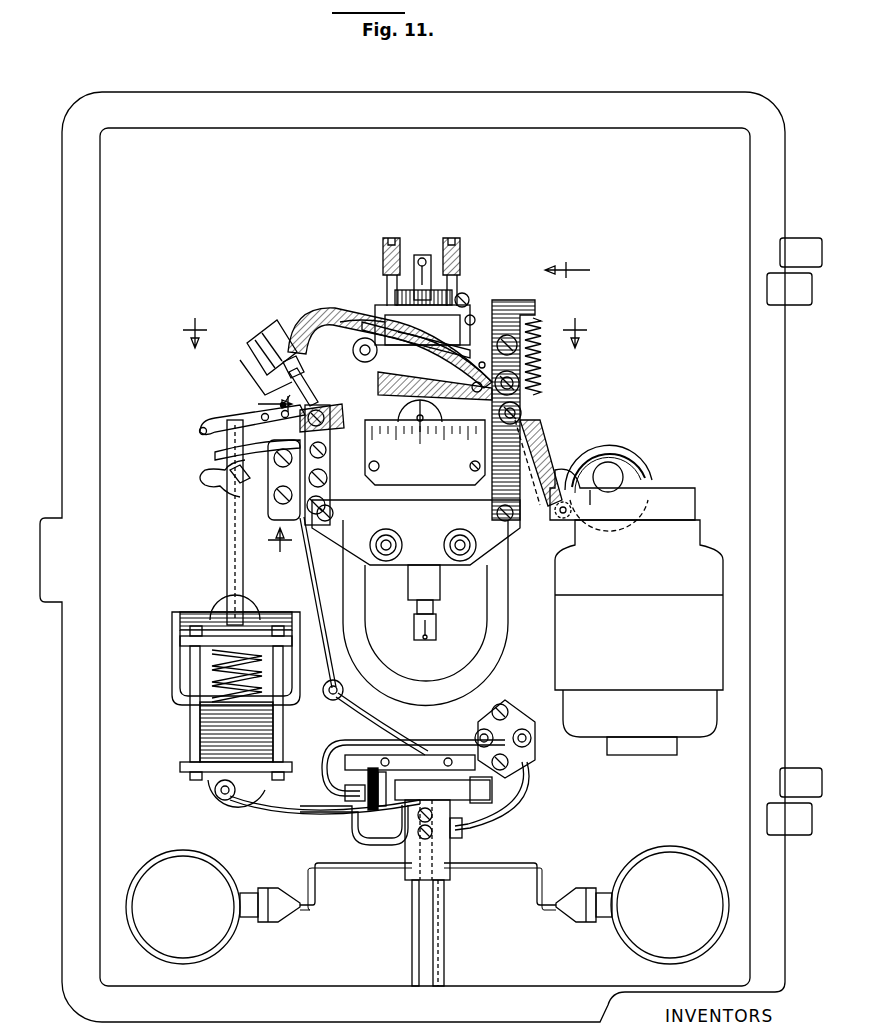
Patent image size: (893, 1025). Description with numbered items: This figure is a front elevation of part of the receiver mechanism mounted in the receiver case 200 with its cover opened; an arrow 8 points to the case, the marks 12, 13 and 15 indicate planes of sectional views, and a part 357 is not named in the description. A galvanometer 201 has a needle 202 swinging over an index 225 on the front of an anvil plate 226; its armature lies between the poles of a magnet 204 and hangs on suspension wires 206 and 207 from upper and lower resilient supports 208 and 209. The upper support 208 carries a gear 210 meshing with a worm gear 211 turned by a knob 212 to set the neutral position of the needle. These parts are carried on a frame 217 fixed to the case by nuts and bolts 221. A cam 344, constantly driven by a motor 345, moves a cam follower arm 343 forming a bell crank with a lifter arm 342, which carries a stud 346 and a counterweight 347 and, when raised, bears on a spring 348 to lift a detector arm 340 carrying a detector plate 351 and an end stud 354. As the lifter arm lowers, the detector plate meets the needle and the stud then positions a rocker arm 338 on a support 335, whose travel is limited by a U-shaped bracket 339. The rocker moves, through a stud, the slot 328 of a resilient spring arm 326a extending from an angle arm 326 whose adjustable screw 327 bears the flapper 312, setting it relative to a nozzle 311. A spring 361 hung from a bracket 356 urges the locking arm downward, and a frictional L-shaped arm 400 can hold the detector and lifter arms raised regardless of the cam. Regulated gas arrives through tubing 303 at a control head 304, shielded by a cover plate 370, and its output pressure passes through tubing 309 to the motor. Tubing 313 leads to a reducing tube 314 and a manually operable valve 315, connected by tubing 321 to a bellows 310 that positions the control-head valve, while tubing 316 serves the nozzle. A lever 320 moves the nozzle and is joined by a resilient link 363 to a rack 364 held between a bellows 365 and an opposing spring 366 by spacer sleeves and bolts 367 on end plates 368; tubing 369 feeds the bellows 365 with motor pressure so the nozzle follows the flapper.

The receiver case 200 is at (148, 108).
The instrument 8 is at (640, 78).
The galvanometer 201 is at (380, 250).
The suspension wire 206 is at (437, 262).
The upper resilient support 208 is at (418, 254).
The gear 210 is at (398, 300).
The worm gear 211 is at (465, 294).
The knob 212 is at (470, 315).
The lifter arm 342 is at (455, 332).
The detector plate 351 is at (460, 372).
The bracket 356 is at (515, 312).
The spring 361 is at (540, 362).
The detector arm 340 is at (318, 310).
The counterweight 347 is at (350, 318).
The spring 348 is at (380, 330).
The lever bar 357 is at (385, 385).
The stud 346 is at (352, 348).
The stud 354 is at (300, 366).
The nozzle 311 is at (268, 390).
The flapper 312 is at (304, 386).
The resilient spring arm 326a is at (340, 402).
The angle arm 326 is at (312, 404).
The adjustable screw 327 is at (283, 402).
The lever 320 is at (206, 428).
The slot 328 is at (232, 456).
The resilient link 363 is at (226, 560).
The U-shaped bracket 339 is at (300, 470).
The support 335 is at (326, 495).
The rocker arm 338 is at (330, 452).
The needle 202 is at (415, 402).
The index 225 is at (410, 480).
The anvil plate 226 is at (474, 474).
The magnet 204 is at (493, 640).
The nuts and bolts 221 is at (372, 538).
The frame 217 is at (530, 536).
The suspension wire 207 is at (437, 622).
The lower resilient support 209 is at (418, 632).
The tubing 316 is at (312, 595).
The cover plate 370 is at (415, 752).
The rack 364 is at (170, 625).
The end plates 368 is at (245, 638).
The spacer sleeves and bolts 367 is at (190, 712).
The opposing spring 366 is at (212, 664).
The bellows 365 is at (205, 736).
The tubing 369 is at (295, 815).
The tubing 321 is at (368, 745).
The manually operable valve 315 is at (480, 730).
The reducing tube 314 is at (532, 740).
The tubing 313 is at (522, 790).
The bellows 310 is at (380, 776).
The control head 304 is at (346, 828).
The tubing 303 is at (445, 928).
The tubing 309 is at (412, 916).
The cam follower arm 343 is at (540, 438).
The L-shaped arm 400 is at (548, 470).
The cam 344 is at (625, 445).
The motor 345 is at (639, 637).
The section line 12 is at (382, 333).
The section line 13 is at (567, 262).
The section line 15 is at (262, 474).